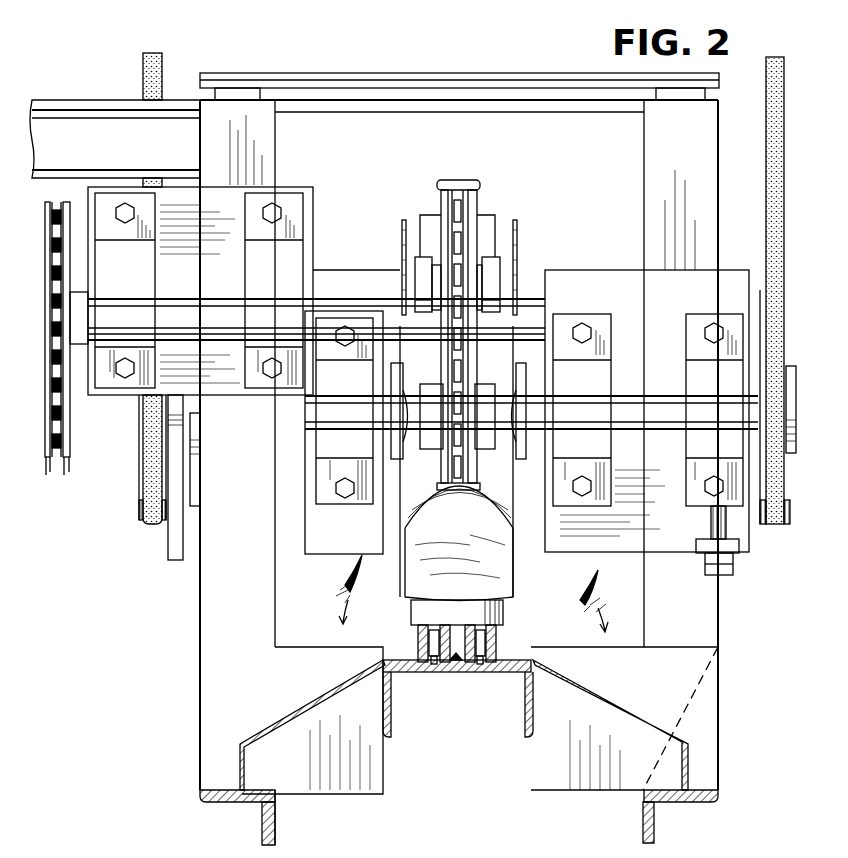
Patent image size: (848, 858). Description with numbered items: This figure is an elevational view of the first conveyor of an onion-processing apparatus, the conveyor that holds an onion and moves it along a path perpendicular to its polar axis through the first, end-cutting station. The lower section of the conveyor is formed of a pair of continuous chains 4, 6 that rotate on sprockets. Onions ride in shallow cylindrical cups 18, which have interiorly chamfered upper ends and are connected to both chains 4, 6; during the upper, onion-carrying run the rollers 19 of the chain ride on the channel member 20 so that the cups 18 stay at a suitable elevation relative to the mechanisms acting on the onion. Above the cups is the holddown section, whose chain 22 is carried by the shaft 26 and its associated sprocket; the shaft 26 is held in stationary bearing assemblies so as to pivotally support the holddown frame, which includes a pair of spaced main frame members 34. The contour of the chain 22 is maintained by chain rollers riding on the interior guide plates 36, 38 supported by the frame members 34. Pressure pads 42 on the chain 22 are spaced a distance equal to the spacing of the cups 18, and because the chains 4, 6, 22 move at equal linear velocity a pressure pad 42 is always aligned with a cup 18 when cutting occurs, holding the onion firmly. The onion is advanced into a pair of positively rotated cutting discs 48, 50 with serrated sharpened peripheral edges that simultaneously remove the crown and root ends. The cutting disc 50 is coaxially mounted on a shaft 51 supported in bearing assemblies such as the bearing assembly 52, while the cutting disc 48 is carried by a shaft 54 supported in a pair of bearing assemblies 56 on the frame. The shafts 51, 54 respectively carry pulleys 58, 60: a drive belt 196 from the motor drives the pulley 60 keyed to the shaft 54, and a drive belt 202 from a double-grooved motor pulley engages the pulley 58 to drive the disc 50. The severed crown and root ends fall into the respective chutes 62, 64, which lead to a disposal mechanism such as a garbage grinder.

The continuous chain 4 is at (496, 642).
The continuous chain 6 is at (418, 641).
The cylindrical cup 18 is at (447, 623).
The chain roller 19 is at (433, 666).
The channel member 20 is at (466, 673).
The holddown chain 22 is at (480, 205).
The shaft 26 is at (220, 310).
The main frame member 34 is at (430, 247).
The interior guide plate 36 is at (490, 225).
The interior guide plate 38 is at (430, 392).
The pressure pad 42 is at (478, 496).
The cutting disc 48 is at (513, 560).
The cutting disc 50 is at (402, 228).
The shaft 51 is at (306, 425).
The bearing assembly 52 is at (320, 470).
The shaft 54 is at (640, 432).
The bearing assembly 56 is at (690, 378).
The pulley 58 is at (143, 480).
The driven pulley 60 is at (786, 336).
The chute 62 is at (313, 660).
The chute 64 is at (575, 660).
The drive belt 196 is at (772, 528).
The drive belt 202 is at (155, 528).